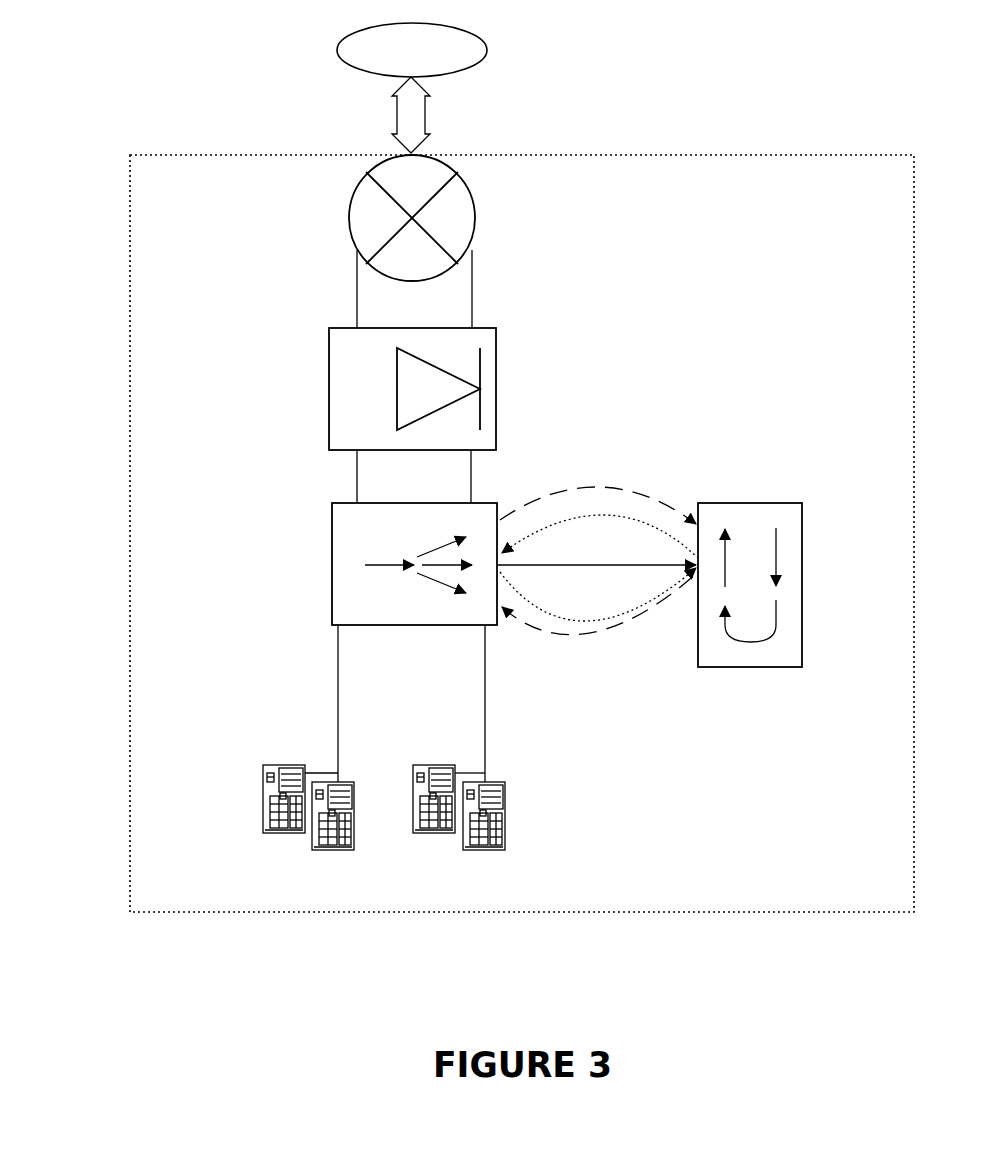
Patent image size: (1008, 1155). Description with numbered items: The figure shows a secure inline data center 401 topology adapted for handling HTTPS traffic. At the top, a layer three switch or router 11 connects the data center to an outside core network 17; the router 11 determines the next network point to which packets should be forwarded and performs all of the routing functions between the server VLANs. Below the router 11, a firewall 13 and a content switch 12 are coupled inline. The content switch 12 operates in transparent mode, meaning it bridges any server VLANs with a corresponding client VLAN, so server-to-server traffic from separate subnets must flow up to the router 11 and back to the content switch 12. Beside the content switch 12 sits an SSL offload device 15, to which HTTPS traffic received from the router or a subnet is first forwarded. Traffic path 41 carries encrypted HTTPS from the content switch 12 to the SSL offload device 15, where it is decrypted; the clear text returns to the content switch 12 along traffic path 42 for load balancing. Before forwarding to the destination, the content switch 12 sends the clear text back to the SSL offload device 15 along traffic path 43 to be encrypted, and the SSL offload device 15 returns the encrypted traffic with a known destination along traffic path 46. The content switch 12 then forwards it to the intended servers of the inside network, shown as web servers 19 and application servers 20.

The data center 401 is at (128, 153).
The outside core network 17 is at (412, 88).
The router 11 is at (348, 222).
The firewall 13 is at (329, 421).
The content switch 12 is at (332, 606).
The SSL offload device 15 is at (802, 640).
The traffic path 41 is at (590, 487).
The traffic path 42 is at (548, 535).
The traffic path 43 is at (647, 597).
The traffic path 46 is at (578, 633).
The web servers 19 is at (263, 808).
The application servers 20 is at (505, 813).